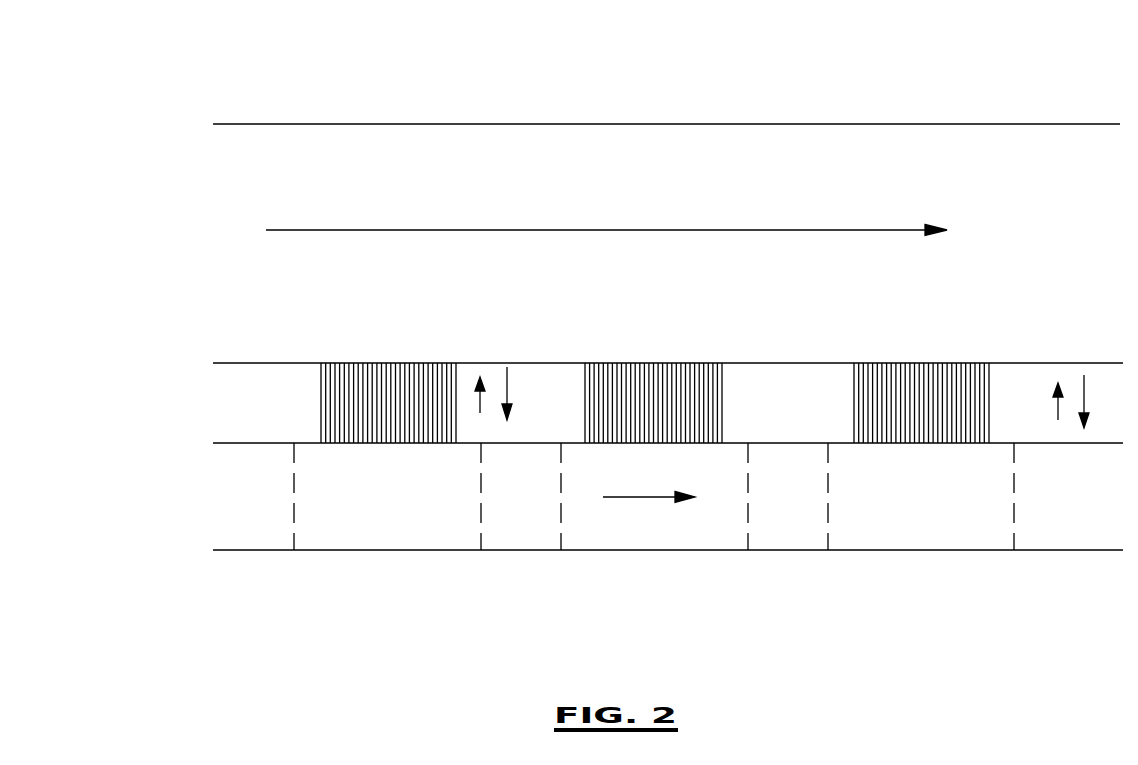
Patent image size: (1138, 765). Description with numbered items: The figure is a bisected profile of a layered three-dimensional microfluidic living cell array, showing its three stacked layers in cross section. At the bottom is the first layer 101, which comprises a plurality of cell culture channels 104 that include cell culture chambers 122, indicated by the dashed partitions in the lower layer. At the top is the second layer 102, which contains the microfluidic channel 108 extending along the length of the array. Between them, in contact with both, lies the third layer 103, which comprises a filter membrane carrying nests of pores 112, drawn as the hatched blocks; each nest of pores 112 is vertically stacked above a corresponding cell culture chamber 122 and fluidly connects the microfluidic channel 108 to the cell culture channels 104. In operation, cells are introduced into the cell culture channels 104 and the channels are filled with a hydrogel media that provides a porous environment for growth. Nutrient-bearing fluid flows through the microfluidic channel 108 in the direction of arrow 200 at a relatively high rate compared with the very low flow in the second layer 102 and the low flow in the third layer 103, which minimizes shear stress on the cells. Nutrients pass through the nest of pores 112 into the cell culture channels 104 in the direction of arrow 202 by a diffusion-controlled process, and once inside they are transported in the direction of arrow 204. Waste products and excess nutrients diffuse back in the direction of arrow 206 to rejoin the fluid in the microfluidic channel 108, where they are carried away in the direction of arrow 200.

The first layer 101 is at (230, 497).
The second layer 102 is at (230, 213).
The third layer 103 is at (225, 401).
The cell culture channel 104 is at (667, 523).
The microfluidic channel 108 is at (922, 151).
The nest of pores 112 is at (383, 362).
The cell culture chamber 122 is at (427, 523).
The arrow indicating fluid flow direction 200 is at (633, 230).
The arrow indicating nutrient passage direction 202 is at (507, 389).
The arrow indicating transport direction in cell culture channel 204 is at (632, 497).
The arrow indicating waste diffusion direction 206 is at (1058, 413).